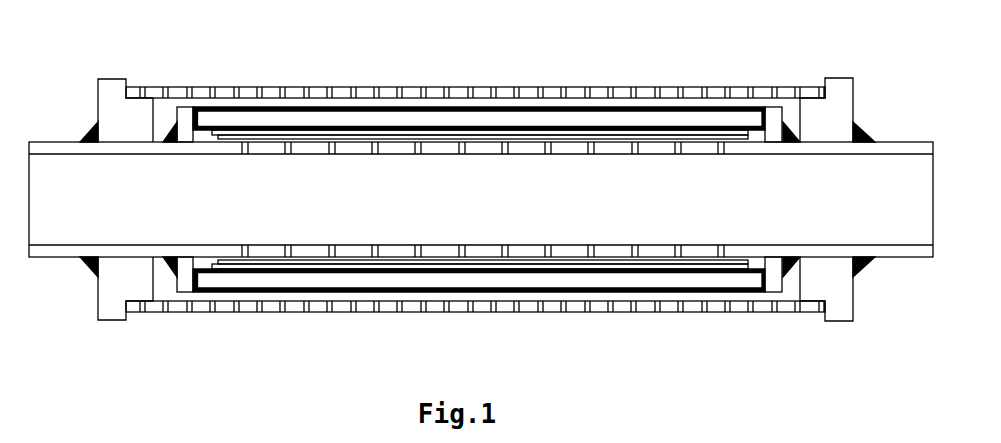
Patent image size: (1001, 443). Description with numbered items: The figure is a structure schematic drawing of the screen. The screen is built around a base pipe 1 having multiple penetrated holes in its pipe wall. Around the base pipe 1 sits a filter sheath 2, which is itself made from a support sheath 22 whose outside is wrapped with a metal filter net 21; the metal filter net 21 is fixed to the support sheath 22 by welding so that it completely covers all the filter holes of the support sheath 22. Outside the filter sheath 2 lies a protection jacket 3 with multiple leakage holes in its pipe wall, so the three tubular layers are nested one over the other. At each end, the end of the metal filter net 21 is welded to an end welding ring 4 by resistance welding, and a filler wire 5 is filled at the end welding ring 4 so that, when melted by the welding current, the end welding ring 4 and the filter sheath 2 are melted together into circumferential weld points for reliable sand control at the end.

The base pipe 1 is at (113, 250).
The filter sheath 2 is at (479, 154).
The metal filter net 21 is at (648, 117).
The support sheath 22 is at (367, 133).
The protection jacket 3 is at (215, 308).
The end welding ring 4 is at (189, 112).
The filler wire 5 is at (792, 267).